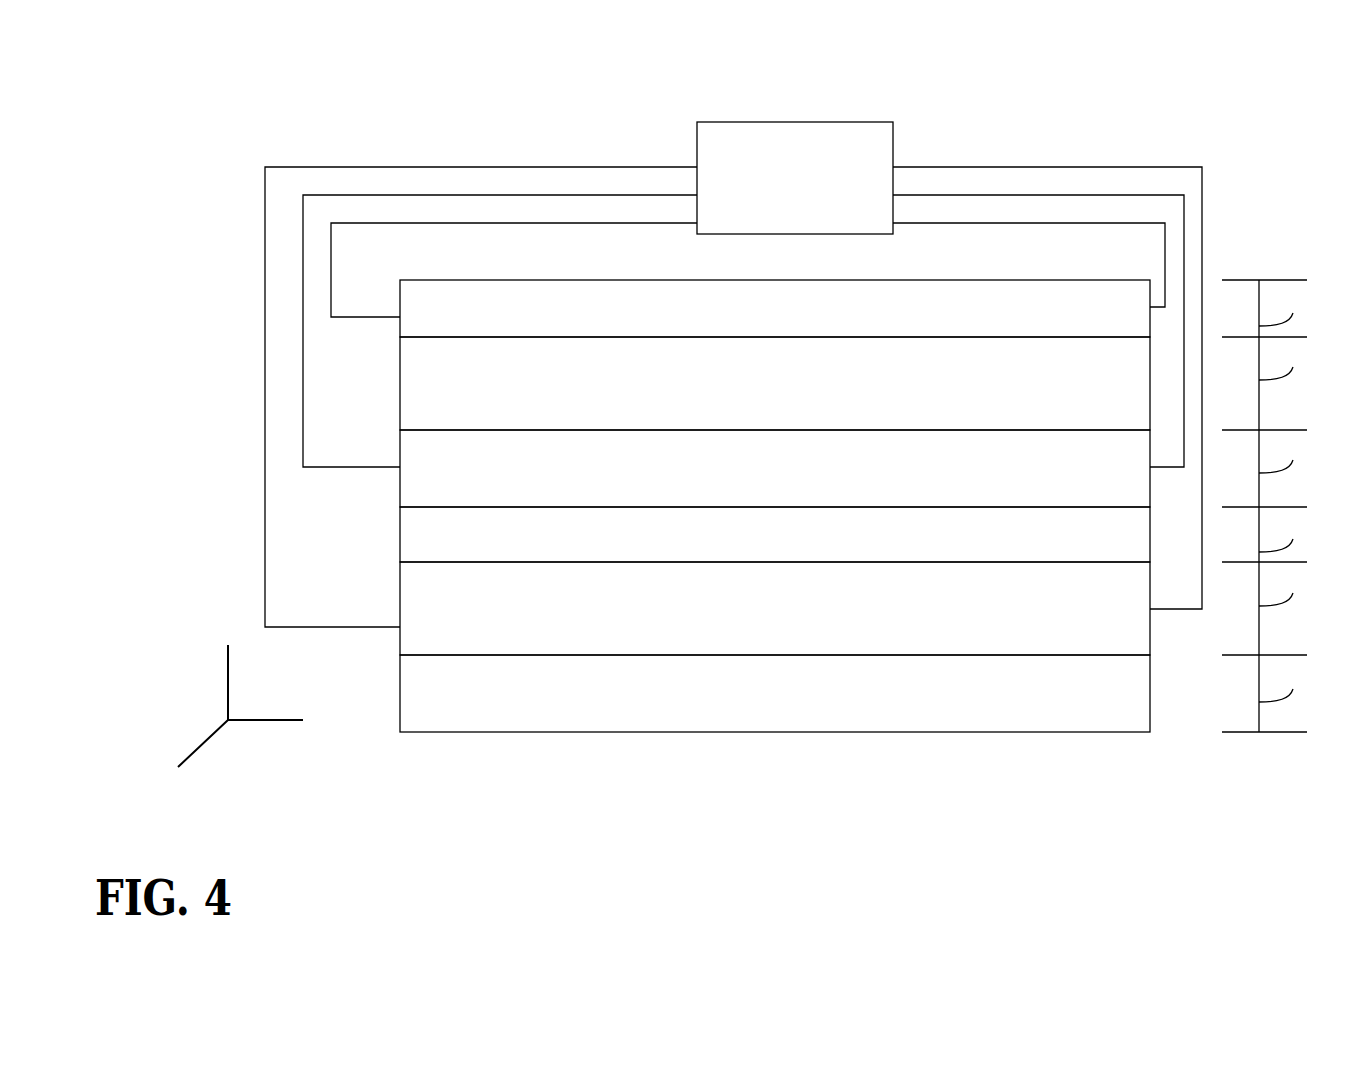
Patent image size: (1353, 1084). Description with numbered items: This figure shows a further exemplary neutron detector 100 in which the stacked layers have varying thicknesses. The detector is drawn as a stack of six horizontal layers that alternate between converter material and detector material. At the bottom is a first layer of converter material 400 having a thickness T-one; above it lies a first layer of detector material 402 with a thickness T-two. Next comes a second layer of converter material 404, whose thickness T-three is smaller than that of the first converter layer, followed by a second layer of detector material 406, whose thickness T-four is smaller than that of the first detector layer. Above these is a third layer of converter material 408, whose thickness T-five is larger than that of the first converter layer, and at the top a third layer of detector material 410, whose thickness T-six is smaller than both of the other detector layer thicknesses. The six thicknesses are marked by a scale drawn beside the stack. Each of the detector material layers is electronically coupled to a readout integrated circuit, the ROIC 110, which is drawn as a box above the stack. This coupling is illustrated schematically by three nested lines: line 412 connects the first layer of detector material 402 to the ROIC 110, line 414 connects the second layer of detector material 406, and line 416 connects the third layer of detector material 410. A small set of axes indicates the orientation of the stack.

The neutron detector 100 is at (184, 144).
The ROIC 110 is at (837, 122).
The first layer of converter material 400 is at (398, 703).
The first layer of detector material 402 is at (398, 607).
The second layer of converter material 404 is at (398, 545).
The second layer of detector material 406 is at (398, 455).
The third layer of converter material 408 is at (398, 385).
The third layer of detector material 410 is at (398, 308).
The line 412 is at (402, 156).
The line 414 is at (445, 179).
The line 416 is at (531, 205).